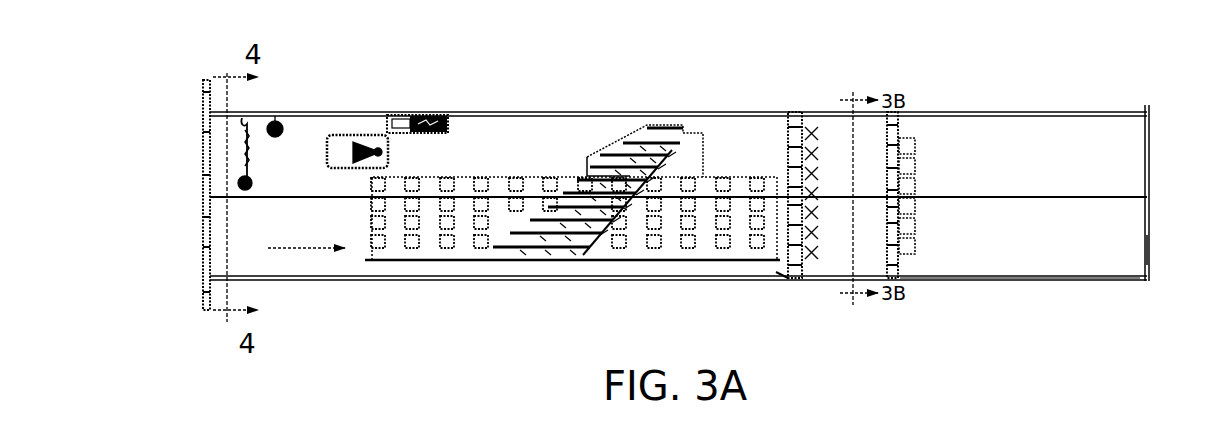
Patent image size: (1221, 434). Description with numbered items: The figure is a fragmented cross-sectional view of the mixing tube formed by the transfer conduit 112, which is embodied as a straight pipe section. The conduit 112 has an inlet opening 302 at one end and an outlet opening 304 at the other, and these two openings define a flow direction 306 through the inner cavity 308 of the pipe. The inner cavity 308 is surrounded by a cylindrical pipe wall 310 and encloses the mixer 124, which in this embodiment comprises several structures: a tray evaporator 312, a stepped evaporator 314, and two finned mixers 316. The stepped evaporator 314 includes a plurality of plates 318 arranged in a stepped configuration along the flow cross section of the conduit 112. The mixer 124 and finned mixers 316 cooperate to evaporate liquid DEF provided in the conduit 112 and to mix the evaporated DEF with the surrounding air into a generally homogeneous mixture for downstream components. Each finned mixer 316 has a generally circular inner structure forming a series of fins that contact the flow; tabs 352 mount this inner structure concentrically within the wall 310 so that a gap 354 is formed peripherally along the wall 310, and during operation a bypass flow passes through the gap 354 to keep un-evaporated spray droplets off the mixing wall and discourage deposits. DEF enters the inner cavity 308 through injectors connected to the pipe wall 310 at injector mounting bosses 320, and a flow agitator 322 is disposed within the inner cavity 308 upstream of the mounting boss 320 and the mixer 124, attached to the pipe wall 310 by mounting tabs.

The transfer conduit 112 is at (967, 98).
The mixer 124 is at (649, 97).
The inlet opening 302 is at (189, 221).
The outlet opening 304 is at (1163, 246).
The flow direction 306 is at (306, 260).
The inner cavity 308 is at (1041, 174).
The cylindrical pipe wall 310 is at (968, 283).
The tray evaporator 312 is at (475, 251).
The stepped evaporator 314 is at (517, 86).
The finned mixer 316 is at (816, 108).
The plates 318 is at (620, 160).
The injector mounting boss 320 is at (357, 140).
The flow agitator 322 is at (258, 117).
The tabs 352 is at (795, 274).
The gap 354 is at (781, 276).